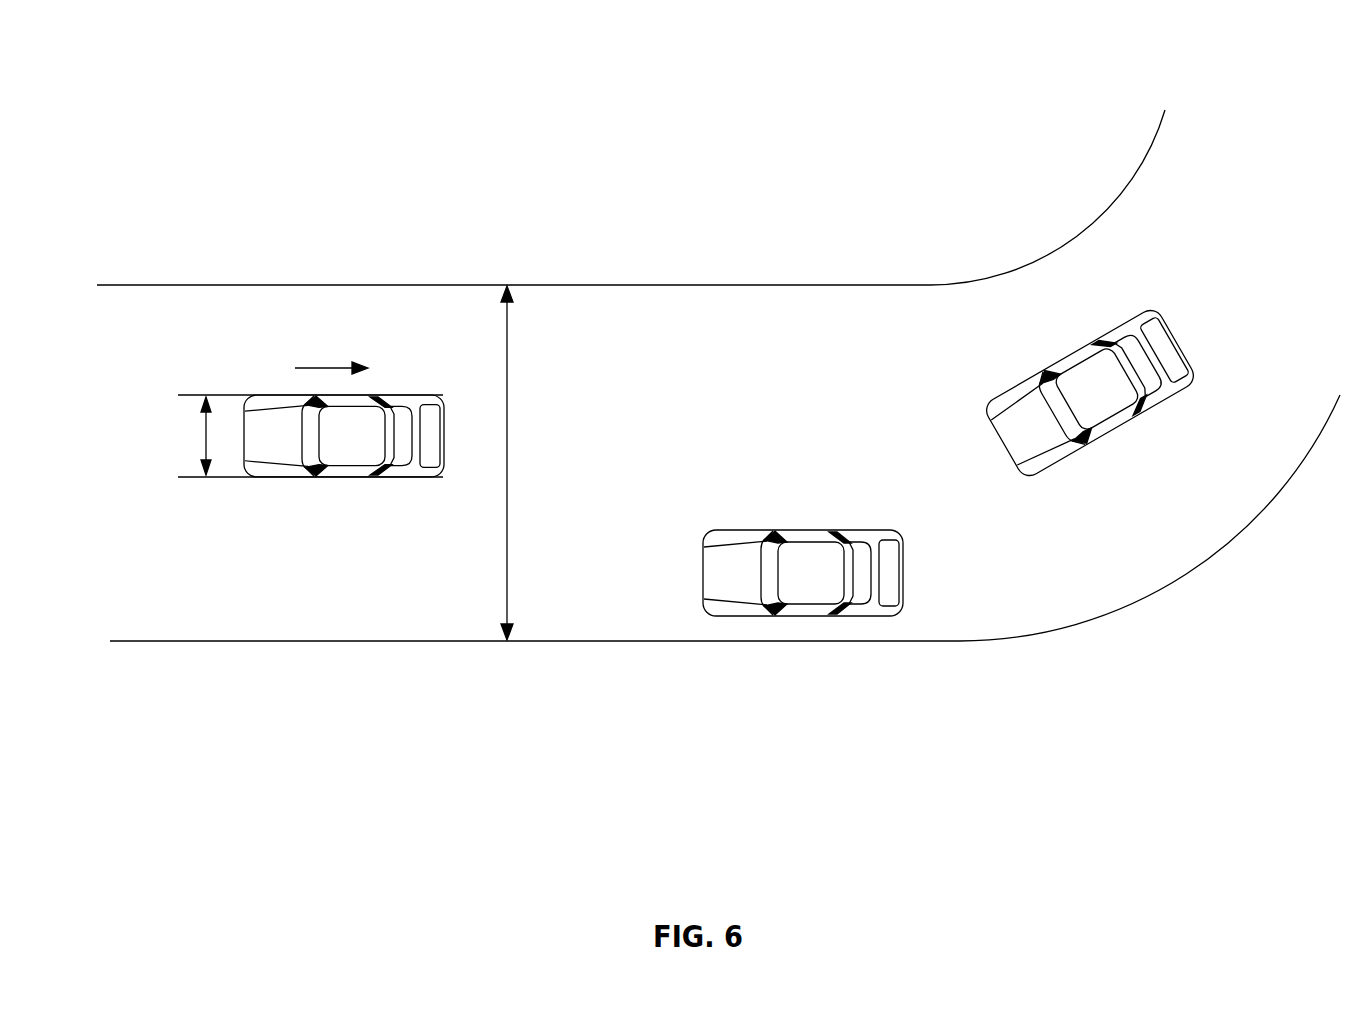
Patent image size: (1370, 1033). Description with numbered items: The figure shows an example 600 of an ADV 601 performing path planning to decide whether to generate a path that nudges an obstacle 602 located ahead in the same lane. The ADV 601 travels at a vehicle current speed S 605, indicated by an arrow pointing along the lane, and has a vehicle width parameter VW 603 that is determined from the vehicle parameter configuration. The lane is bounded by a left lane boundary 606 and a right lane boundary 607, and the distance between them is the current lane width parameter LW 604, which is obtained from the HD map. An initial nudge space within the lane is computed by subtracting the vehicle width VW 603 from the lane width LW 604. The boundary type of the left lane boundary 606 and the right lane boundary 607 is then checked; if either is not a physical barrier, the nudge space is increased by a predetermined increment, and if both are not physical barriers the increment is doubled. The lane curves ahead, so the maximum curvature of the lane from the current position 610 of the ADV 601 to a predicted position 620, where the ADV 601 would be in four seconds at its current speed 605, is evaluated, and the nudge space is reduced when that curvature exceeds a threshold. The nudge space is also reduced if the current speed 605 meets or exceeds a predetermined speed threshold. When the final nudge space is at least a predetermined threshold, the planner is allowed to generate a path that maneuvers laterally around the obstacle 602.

The example of an ADV performing path planning 600 is at (1310, 40).
The ADV 601 is at (721, 393).
The obstacle 602 is at (803, 573).
The vehicle width parameter VW 603 is at (206, 450).
The current lane width parameter LW 604 is at (508, 450).
The vehicle current speed S 605 is at (331, 355).
The left lane boundary 606 is at (410, 285).
The right lane boundary 607 is at (425, 641).
The current position 610 is at (192, 540).
The predicted position 620 is at (1093, 440).